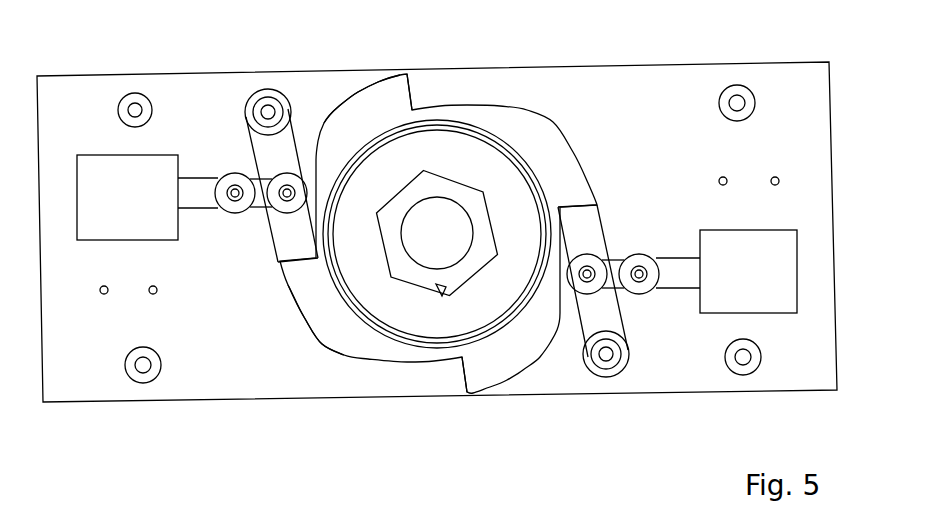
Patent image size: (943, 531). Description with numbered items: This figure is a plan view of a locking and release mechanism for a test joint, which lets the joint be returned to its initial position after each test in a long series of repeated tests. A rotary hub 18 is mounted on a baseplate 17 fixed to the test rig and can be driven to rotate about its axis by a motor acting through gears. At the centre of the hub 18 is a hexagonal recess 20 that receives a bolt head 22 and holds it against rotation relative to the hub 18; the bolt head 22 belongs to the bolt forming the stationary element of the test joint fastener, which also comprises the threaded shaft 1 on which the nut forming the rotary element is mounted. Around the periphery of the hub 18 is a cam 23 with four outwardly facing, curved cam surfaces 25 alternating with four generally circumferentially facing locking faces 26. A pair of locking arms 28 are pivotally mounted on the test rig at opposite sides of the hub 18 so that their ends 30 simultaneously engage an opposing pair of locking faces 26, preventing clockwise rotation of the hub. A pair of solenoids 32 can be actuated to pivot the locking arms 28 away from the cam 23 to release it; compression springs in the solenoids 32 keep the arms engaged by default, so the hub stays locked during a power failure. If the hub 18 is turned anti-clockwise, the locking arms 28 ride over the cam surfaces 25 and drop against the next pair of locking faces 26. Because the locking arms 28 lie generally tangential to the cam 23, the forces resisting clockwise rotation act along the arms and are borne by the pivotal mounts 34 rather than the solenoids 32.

The threaded shaft 1 is at (443, 197).
The baseplate 17 is at (212, 373).
The rotary hub 18 is at (392, 307).
The recess 20 is at (439, 289).
The bolt head 22 is at (487, 204).
The cam 23 is at (512, 363).
The cam surfaces 25 is at (357, 90).
The locking faces 26 is at (412, 97).
The locking arms 28 is at (287, 150).
The ends of the locking arms 30 is at (572, 207).
The solenoids 32 is at (157, 163).
The pivotal mounts 34 is at (266, 89).